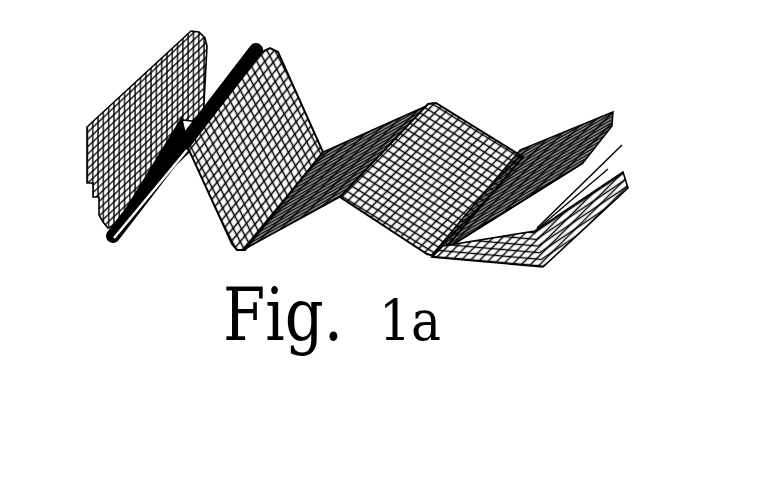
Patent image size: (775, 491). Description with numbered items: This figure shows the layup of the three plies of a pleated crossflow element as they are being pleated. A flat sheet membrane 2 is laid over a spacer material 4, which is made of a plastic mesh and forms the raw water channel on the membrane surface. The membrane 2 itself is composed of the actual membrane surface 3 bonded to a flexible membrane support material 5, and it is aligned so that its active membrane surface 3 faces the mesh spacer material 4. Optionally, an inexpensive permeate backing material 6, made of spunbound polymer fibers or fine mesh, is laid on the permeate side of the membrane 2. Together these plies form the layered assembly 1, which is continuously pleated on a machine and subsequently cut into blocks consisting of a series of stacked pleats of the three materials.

The layered assembly 1 is at (376, 231).
The flat sheet membrane 2 is at (623, 145).
The membrane surface 3 is at (610, 168).
The spacer material 4 is at (635, 177).
The membrane support material 5 is at (581, 163).
The permeate backing material 6 is at (612, 113).